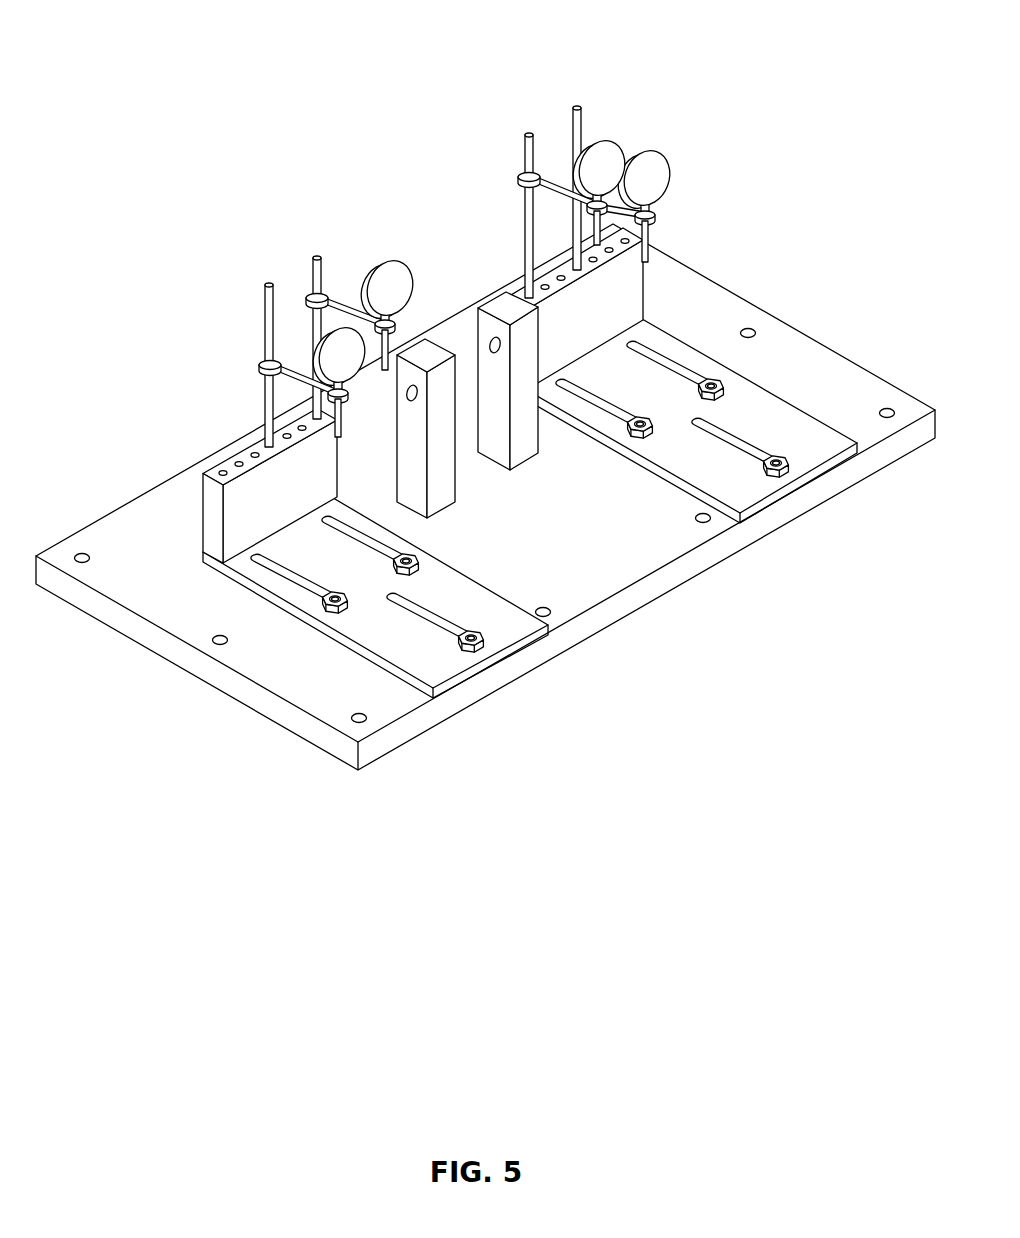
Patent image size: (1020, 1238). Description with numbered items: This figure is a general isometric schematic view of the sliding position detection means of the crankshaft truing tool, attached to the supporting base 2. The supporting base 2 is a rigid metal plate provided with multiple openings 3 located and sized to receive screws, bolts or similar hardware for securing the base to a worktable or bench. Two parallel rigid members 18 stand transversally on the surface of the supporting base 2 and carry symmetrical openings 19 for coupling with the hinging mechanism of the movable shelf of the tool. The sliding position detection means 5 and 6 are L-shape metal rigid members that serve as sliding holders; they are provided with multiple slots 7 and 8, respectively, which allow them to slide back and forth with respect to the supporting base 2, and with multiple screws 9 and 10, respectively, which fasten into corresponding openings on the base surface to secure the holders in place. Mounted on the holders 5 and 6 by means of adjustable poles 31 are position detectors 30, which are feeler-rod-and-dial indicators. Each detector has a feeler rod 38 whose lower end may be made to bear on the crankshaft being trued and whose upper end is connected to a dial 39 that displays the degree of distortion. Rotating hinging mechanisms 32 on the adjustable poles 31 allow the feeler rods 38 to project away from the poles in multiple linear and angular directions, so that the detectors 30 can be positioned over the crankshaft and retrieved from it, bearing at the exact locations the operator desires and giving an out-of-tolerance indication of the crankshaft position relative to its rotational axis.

The supporting base 2 is at (150, 643).
The openings 3 is at (92, 559).
The sliding position detection means 5 is at (303, 541).
The sliding position detection means 6 is at (613, 365).
The slots 7 is at (304, 578).
The slots 8 is at (600, 397).
The screws 9 is at (348, 605).
The screws 10 is at (722, 388).
The parallel rigid members 18 is at (525, 444).
The symmetrical openings 19 is at (412, 402).
The position detectors 30 is at (343, 332).
The adjustable poles 31 is at (312, 256).
The rotating hinging mechanisms 32 is at (310, 306).
The feeler rods 38 is at (383, 378).
The dials 39 is at (396, 292).